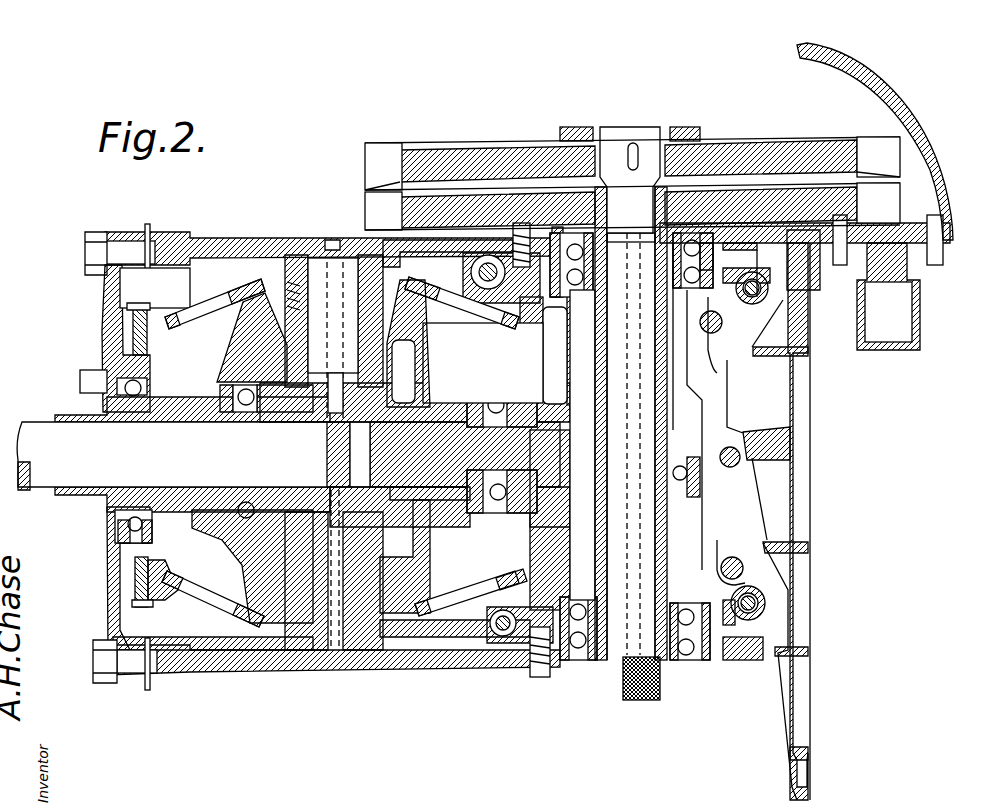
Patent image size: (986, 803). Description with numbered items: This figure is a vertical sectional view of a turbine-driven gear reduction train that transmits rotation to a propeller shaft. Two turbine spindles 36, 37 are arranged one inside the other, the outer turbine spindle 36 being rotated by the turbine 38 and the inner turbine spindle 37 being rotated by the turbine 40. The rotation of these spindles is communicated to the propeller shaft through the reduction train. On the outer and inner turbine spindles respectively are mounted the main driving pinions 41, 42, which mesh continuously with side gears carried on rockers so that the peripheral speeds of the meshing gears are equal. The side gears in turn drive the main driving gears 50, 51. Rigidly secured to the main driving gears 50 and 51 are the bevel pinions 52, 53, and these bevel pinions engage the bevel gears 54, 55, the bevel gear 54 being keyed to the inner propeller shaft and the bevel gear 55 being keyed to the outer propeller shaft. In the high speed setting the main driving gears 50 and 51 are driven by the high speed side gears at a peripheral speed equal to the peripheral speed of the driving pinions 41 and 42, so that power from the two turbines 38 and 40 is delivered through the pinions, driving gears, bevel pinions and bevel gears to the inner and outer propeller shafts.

The turbine spindle 36 is at (657, 157).
The turbine spindle 37 is at (617, 210).
The turbine 38 is at (437, 158).
The turbine 40 is at (463, 200).
The main driving pinion 41 is at (587, 327).
The main driving pinion 42 is at (582, 445).
The main driving gear 50 is at (200, 297).
The main driving gear 51 is at (208, 583).
The bevel pinion 52 is at (392, 297).
The bevel pinion 53 is at (393, 603).
The bevel gear 54 is at (423, 357).
The bevel gear 55 is at (205, 543).